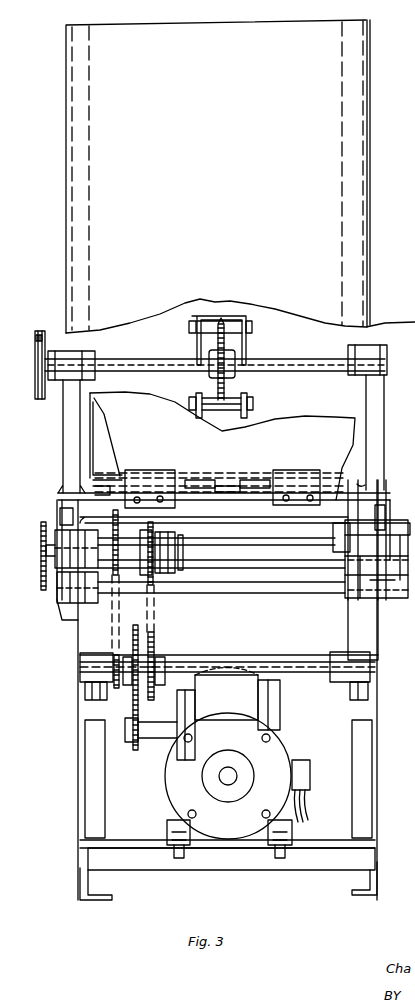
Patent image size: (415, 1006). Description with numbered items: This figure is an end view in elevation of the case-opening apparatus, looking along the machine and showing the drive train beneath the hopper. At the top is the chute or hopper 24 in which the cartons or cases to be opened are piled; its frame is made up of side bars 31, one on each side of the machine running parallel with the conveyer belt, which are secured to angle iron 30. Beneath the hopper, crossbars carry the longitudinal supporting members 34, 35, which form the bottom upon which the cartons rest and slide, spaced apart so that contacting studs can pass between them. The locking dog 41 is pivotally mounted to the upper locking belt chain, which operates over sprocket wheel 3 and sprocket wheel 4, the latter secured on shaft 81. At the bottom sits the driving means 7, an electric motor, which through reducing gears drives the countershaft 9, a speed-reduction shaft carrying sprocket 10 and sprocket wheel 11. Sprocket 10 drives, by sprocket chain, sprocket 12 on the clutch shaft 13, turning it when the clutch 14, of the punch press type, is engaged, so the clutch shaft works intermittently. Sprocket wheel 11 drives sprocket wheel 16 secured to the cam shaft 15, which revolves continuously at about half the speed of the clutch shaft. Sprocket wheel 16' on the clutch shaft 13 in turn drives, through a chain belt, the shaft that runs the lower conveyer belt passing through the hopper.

The chute or hopper 24 is at (240, 176).
The angle iron 30 is at (81, 286).
The locking dog 41 is at (247, 345).
The shaft 81 is at (280, 360).
The sprocket wheel 4 is at (228, 402).
The longitudinal supporting member 34 is at (207, 480).
The longitudinal supporting member 35 is at (246, 478).
The sprocket wheel 16 is at (103, 576).
The sprocket 12 is at (156, 530).
The cam shaft 15 is at (216, 544).
The clutch 14 is at (184, 563).
The clutch shaft 13 is at (276, 556).
The sprocket wheel 16' is at (24, 556).
The side bar 31 is at (76, 632).
The sprocket wheel 3 is at (134, 622).
The sprocket 10 is at (155, 650).
The countershaft 9 is at (283, 668).
The sprocket wheel 11 is at (116, 690).
The driving means 7 is at (128, 745).